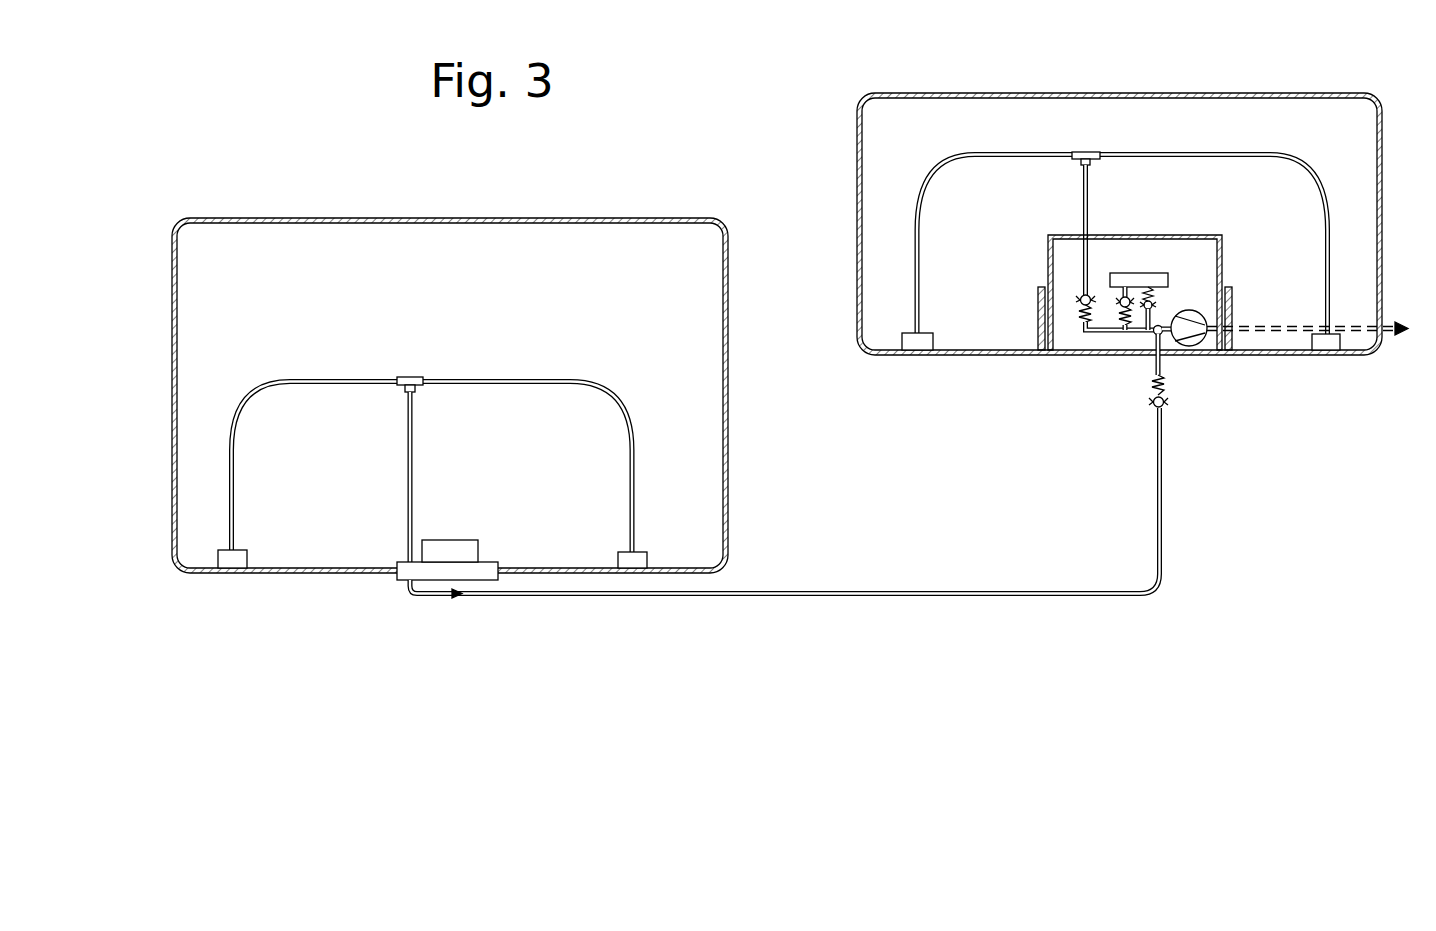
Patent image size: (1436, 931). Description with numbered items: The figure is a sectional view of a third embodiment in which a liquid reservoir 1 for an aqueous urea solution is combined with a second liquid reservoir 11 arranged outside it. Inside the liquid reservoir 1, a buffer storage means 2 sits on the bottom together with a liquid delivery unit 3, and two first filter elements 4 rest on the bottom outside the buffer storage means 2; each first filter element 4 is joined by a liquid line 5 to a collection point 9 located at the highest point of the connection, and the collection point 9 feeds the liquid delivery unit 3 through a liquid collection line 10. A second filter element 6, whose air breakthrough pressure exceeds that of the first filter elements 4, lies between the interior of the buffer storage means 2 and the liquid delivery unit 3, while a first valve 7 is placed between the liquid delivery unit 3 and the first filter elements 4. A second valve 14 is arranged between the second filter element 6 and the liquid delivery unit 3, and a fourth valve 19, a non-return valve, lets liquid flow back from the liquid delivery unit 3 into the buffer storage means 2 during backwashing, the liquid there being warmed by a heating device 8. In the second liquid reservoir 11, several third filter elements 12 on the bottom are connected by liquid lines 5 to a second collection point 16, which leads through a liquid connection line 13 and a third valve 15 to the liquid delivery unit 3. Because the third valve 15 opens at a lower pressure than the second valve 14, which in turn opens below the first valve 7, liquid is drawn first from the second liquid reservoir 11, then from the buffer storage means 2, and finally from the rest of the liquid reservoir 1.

The liquid reservoir 1 is at (1380, 150).
The buffer storage means 2 is at (1222, 250).
The liquid delivery unit 3 is at (1196, 348).
The first filter elements 4 is at (916, 345).
The liquid line 5 is at (272, 388).
The second filter element 6 is at (1160, 275).
The first valve 7 is at (1082, 297).
The heating device 8 is at (1232, 338).
The collection point 9 is at (1083, 152).
The liquid collection line 10 is at (1082, 201).
The second liquid reservoir 11 is at (730, 280).
The third filter element 12 is at (235, 560).
The liquid connection line 13 is at (840, 591).
The second valve 14 is at (1118, 325).
The third valve 15 is at (1152, 405).
The second collection point 16 is at (414, 377).
The fourth valve 19 is at (1152, 303).